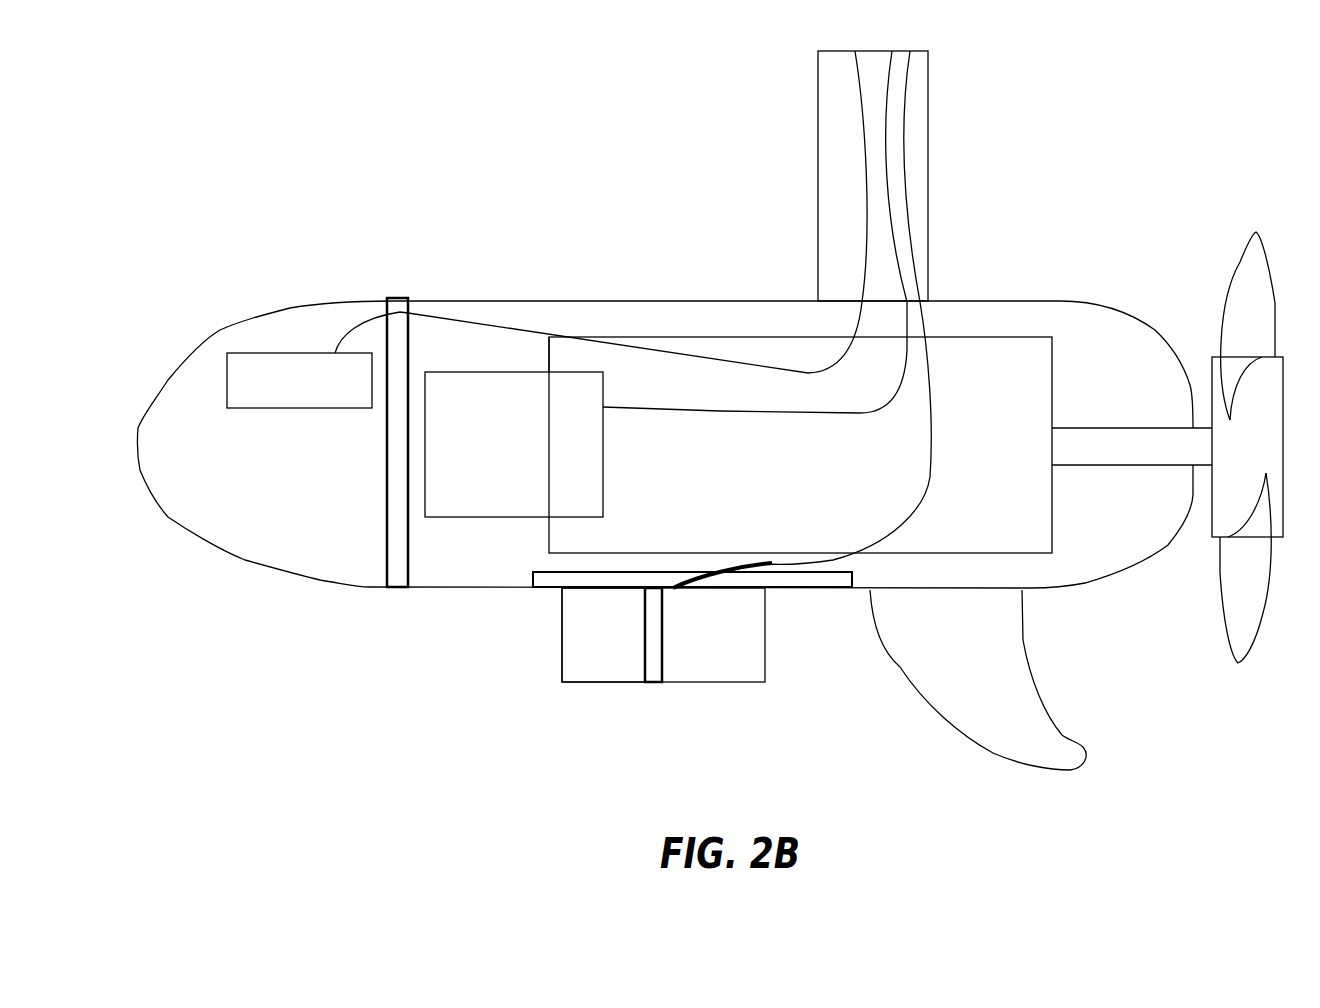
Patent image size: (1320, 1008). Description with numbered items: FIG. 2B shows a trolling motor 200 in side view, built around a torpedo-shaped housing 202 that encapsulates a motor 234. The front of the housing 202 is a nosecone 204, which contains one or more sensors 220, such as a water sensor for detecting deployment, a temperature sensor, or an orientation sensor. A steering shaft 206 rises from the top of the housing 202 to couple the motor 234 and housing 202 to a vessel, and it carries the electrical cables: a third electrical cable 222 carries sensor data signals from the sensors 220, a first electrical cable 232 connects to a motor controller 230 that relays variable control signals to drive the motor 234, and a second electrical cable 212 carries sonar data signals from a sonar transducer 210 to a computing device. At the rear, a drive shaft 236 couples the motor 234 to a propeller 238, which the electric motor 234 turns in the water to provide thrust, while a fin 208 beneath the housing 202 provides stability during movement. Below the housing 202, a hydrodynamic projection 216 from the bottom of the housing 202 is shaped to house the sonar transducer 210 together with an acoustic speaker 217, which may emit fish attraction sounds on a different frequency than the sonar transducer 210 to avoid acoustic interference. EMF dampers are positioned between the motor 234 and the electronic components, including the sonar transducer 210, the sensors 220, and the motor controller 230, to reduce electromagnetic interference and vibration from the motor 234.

The trolling motor 200 is at (156, 38).
The housing 202 is at (578, 300).
The nosecone 204 is at (263, 316).
The steering shaft 206 is at (818, 176).
The fin 208 is at (978, 680).
The sonar transducer 210 is at (713, 635).
The second electrical cable 212 is at (890, 535).
The hydrodynamic projection 216 is at (610, 683).
The acoustic speaker 217 is at (603, 635).
The sensors 220 is at (299, 380).
The third electrical cable 222 is at (448, 317).
The motor controller 230 is at (514, 427).
The first electrical cable 232 is at (720, 412).
The motor 234 is at (800, 445).
The drive shaft 236 is at (1132, 446).
The propeller 238 is at (1222, 302).